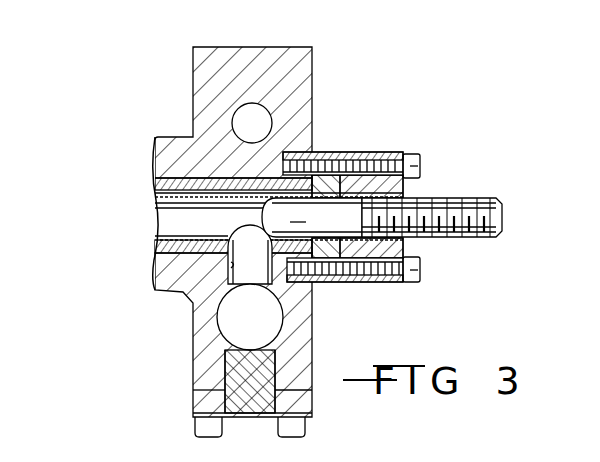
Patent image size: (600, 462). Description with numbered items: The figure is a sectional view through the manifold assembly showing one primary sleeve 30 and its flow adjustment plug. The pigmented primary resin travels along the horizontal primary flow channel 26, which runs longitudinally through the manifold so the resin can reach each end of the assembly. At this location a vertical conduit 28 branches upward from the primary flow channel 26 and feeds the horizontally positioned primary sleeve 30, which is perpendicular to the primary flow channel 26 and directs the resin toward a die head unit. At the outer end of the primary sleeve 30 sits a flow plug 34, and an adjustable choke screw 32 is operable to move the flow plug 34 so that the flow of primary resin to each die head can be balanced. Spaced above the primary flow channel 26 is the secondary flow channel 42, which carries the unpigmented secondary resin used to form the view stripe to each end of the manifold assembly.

The primary flow channel 26 is at (283, 318).
The vertical conduit 28 is at (222, 277).
The primary sleeve 30 is at (153, 207).
The adjustable choke screw 32 is at (466, 198).
The flow plug 34 is at (312, 215).
The secondary flow channel 42 is at (266, 113).